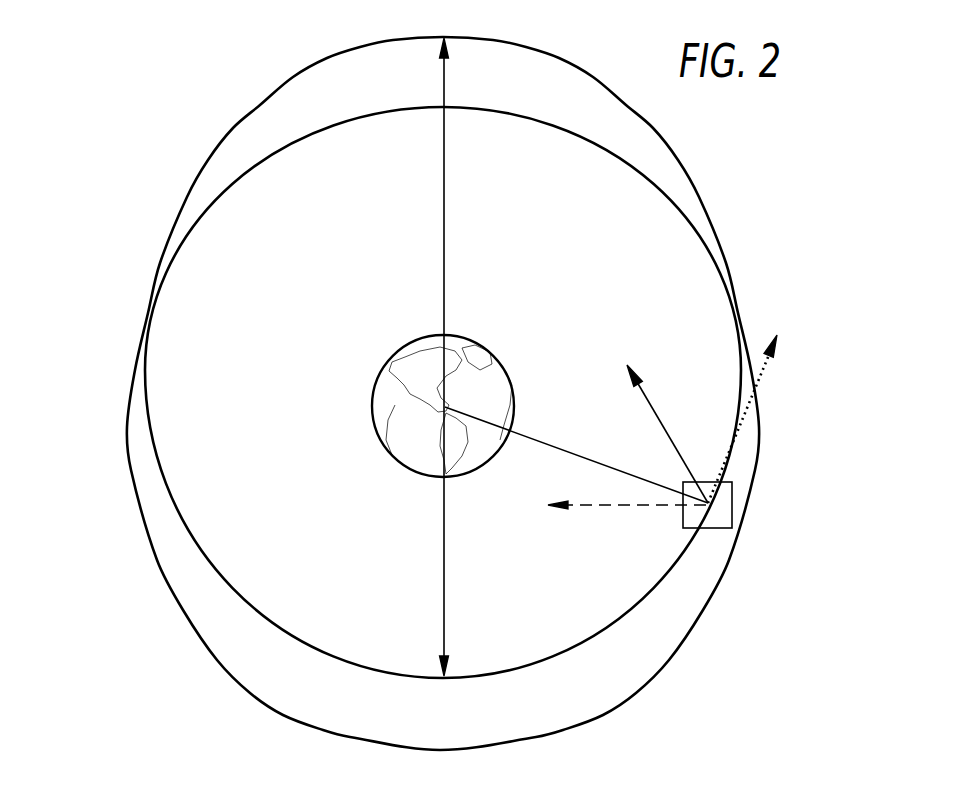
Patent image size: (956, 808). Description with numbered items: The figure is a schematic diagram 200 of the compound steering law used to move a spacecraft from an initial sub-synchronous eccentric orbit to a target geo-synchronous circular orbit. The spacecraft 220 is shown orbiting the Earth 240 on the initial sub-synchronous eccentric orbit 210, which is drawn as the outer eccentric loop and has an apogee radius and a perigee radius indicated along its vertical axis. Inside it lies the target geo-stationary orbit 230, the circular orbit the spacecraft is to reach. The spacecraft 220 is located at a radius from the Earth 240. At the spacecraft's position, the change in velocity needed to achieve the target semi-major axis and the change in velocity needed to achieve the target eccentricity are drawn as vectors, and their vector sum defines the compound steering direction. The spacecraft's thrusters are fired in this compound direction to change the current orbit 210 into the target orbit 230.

The schematic diagram 200 is at (688, 733).
The initial sub-synchronous eccentric orbit 210 is at (234, 128).
The spacecraft 220 is at (720, 513).
The target geo-synchronous circular orbit 230 is at (325, 727).
The Earth 240 is at (372, 407).